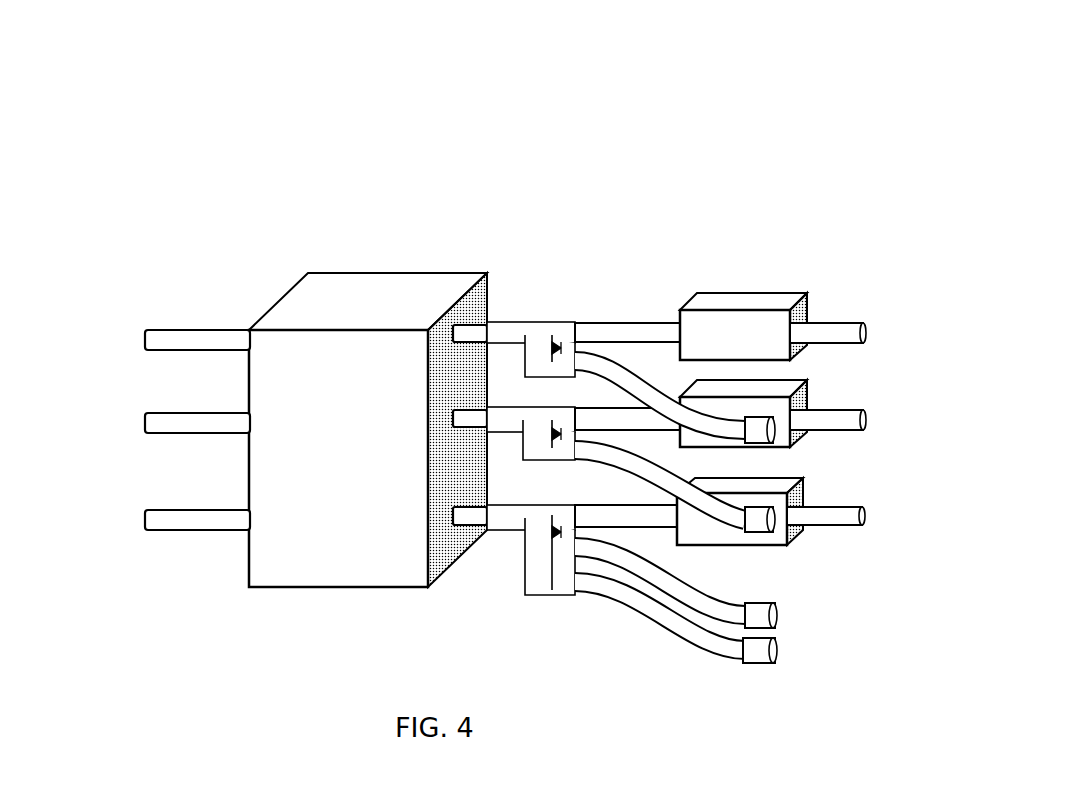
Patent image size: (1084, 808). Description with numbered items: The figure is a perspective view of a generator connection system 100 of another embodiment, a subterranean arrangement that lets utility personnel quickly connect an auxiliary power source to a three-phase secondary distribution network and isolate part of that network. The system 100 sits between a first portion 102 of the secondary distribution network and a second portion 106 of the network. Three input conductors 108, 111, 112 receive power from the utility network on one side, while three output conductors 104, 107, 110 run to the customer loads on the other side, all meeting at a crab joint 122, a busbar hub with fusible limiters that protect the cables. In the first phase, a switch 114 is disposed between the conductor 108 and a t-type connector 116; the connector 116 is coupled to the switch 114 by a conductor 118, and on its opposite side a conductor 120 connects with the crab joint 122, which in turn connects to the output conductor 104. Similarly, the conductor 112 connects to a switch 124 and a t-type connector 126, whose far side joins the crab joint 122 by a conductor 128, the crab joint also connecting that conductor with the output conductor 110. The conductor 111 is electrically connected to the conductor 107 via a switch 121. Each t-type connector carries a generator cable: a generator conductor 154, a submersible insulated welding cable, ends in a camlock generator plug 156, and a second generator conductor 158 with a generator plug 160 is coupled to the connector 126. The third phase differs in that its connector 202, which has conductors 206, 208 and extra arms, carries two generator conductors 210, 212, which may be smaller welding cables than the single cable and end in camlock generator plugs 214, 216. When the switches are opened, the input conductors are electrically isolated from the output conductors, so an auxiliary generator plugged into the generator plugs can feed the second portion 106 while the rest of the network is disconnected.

The generator connection system 100 is at (580, 158).
The first portion of secondary distribution network 102 is at (161, 279).
The second portion of secondary distribution network 106 is at (869, 280).
The crab joint 122 is at (337, 278).
The output conductor 104 is at (145, 351).
The output conductor 110 is at (167, 435).
The output conductor 107 is at (145, 524).
The conductor 120 is at (488, 322).
The conductor 128 is at (460, 430).
The conductor 206 is at (460, 530).
The t-type connector 116 is at (547, 320).
The t-type connector 126 is at (535, 465).
The connector 202 is at (520, 568).
The conductor 118 is at (648, 320).
The conductor 208 is at (635, 505).
The switch 114 is at (728, 292).
The switch 124 is at (807, 390).
The switch 121 is at (700, 548).
The input conductor 108 is at (867, 333).
The input conductor 112 is at (852, 432).
The input conductor 111 is at (867, 514).
The generator conductor 154 is at (633, 383).
The second generator conductor 158 is at (655, 470).
The generator conductor 210 is at (663, 570).
The generator conductor 212 is at (635, 612).
The generator plug 156 is at (757, 443).
The generator plug 160 is at (752, 534).
The generator plug 214 is at (777, 617).
The generator plug 216 is at (775, 655).